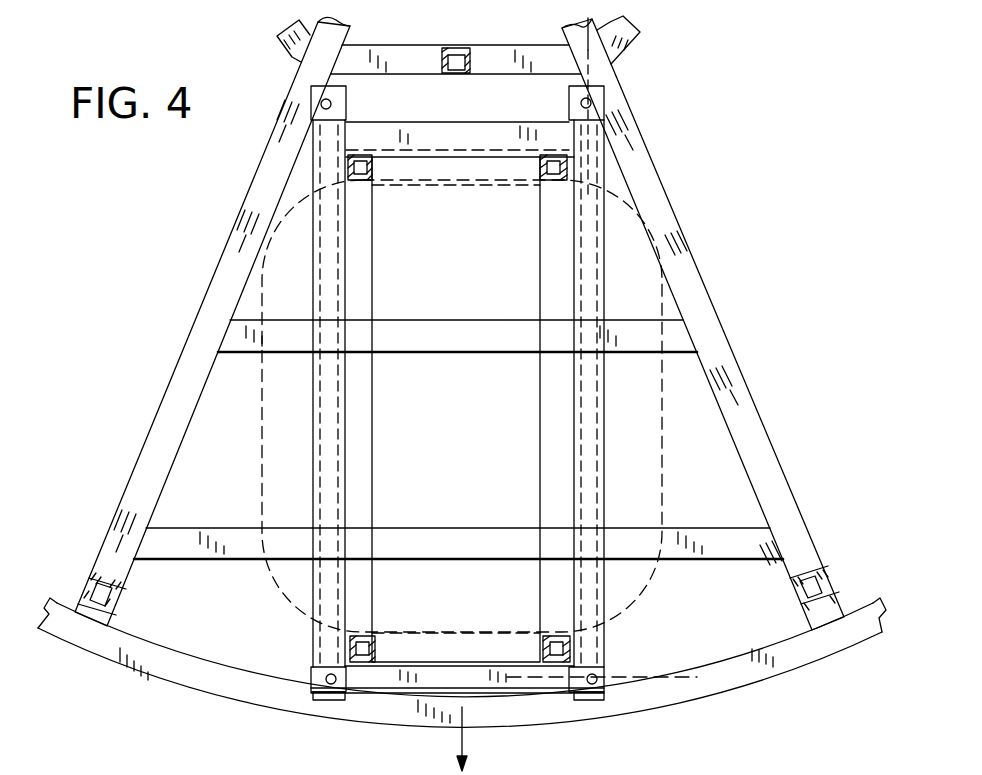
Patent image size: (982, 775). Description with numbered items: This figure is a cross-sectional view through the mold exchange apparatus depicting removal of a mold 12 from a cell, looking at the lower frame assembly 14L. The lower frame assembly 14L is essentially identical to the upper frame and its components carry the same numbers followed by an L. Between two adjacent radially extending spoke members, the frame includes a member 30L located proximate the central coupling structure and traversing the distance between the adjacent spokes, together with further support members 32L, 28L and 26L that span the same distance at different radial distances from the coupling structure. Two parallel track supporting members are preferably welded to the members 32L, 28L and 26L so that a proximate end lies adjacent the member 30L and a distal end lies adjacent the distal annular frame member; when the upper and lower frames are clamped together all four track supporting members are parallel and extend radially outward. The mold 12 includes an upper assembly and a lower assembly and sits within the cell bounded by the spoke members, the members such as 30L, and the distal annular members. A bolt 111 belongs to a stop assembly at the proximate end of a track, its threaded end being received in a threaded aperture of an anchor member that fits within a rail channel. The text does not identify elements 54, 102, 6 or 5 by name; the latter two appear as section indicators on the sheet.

The lower frame assembly 14L is at (772, 684).
The support member 32L is at (290, 160).
The member traversing adjacent spoke members 30L is at (500, 63).
The bolt 111 is at (591, 103).
The vertical side rails 54 is at (330, 287).
The mold 12 is at (471, 434).
The support member 28L is at (687, 342).
The support member 26L is at (748, 542).
The section line 6- 6 is at (603, 32).
The section line 5- 5 is at (515, 685).
The direction arrow 102 is at (457, 740).